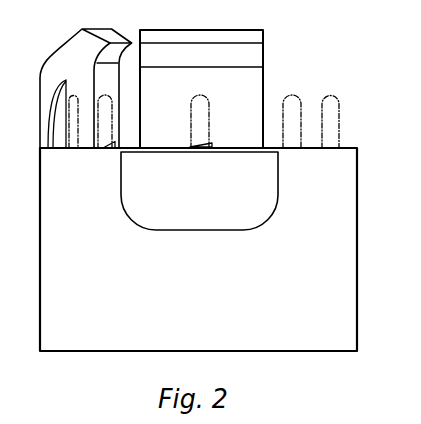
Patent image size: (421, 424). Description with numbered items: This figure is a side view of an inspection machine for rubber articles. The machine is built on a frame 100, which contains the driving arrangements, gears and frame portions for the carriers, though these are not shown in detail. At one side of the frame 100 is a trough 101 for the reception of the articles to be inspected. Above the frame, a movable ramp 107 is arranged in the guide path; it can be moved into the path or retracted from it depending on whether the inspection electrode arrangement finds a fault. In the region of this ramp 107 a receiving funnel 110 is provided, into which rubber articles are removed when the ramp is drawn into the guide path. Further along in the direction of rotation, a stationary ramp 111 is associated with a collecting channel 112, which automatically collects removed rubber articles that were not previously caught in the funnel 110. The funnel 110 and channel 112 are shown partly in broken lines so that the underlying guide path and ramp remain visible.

The frame 100 is at (292, 345).
The trough 101 is at (165, 223).
The ramp 107 is at (113, 145).
The receiving funnel 110 is at (63, 50).
The stationary ramp 111 is at (212, 143).
The collecting channel 112 is at (265, 48).